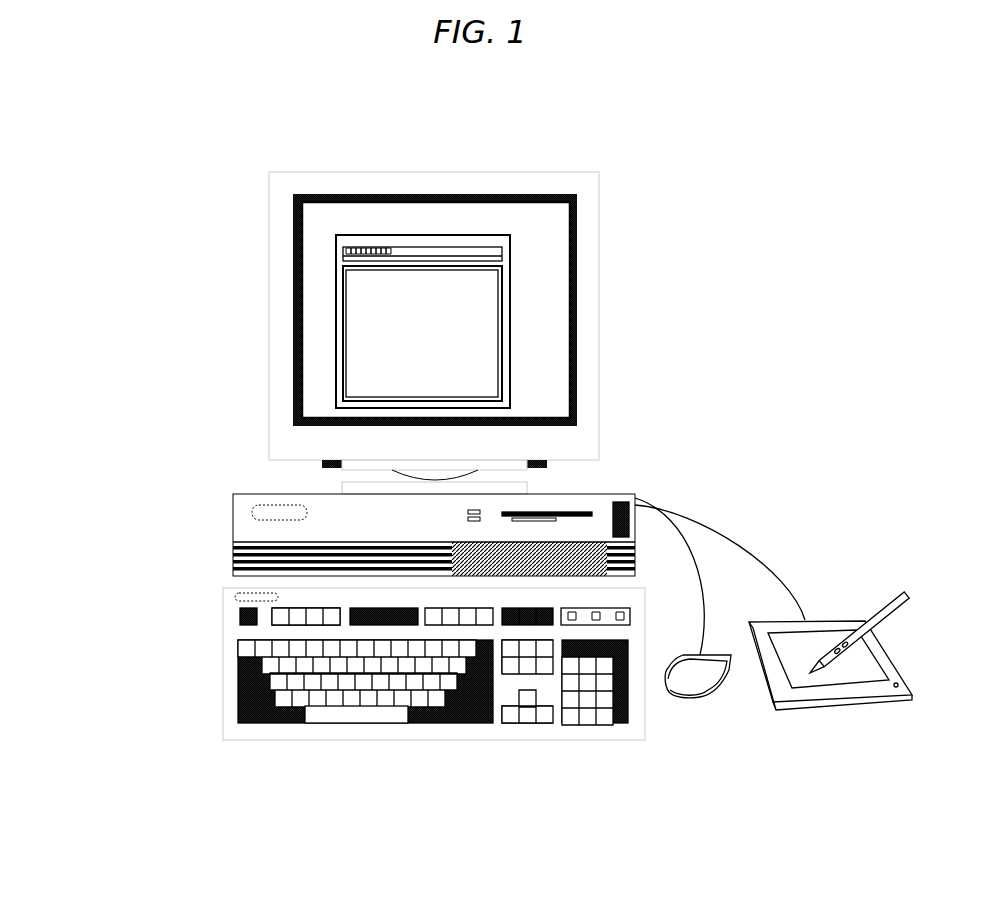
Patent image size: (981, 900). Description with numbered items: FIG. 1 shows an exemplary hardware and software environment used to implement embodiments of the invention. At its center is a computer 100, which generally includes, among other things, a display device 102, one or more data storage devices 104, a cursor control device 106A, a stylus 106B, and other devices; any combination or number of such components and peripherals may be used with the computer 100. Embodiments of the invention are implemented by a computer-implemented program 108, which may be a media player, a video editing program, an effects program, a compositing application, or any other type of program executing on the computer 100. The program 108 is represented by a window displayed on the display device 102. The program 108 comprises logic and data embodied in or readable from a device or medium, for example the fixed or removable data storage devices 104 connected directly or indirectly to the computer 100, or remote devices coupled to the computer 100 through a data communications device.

The computer 100 is at (237, 512).
The display device 102 is at (578, 168).
The data storage device 104 is at (578, 510).
The cursor control device 106A is at (700, 713).
The stylus 106B is at (847, 713).
The program 108 is at (513, 320).